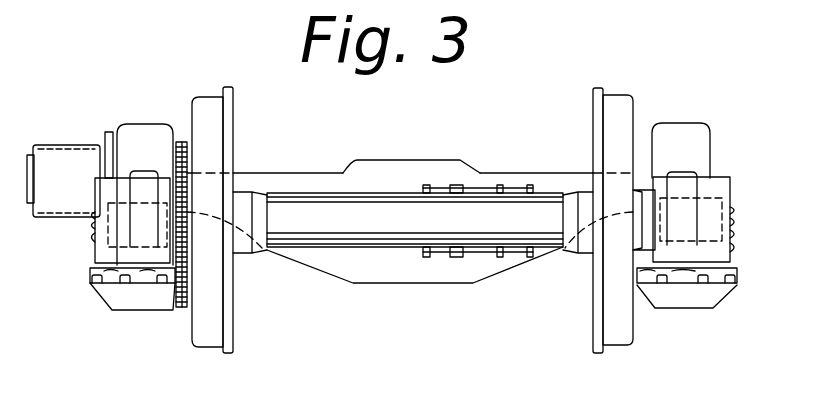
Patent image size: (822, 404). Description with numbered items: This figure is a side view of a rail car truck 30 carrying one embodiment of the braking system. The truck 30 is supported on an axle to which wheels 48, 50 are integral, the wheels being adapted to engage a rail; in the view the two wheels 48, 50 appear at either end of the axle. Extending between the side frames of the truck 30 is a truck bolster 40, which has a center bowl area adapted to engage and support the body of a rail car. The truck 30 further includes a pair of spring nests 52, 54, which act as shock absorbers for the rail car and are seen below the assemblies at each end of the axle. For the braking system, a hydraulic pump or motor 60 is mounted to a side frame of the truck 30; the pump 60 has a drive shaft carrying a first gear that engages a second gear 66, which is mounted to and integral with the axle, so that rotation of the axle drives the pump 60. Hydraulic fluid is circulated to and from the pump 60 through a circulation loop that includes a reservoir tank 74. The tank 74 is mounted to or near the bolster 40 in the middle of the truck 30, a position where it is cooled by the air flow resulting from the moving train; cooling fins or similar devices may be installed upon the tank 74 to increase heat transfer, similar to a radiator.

The rail car truck 30 is at (683, 107).
The truck bolster 40 is at (420, 272).
The wheel 48 is at (627, 330).
The wheel 50 is at (220, 313).
The spring nest 52 is at (110, 281).
The spring nest 54 is at (713, 297).
The hydraulic pump or motor 60 is at (58, 168).
The second gear 66 is at (173, 287).
The reservoir tank 74 is at (517, 188).